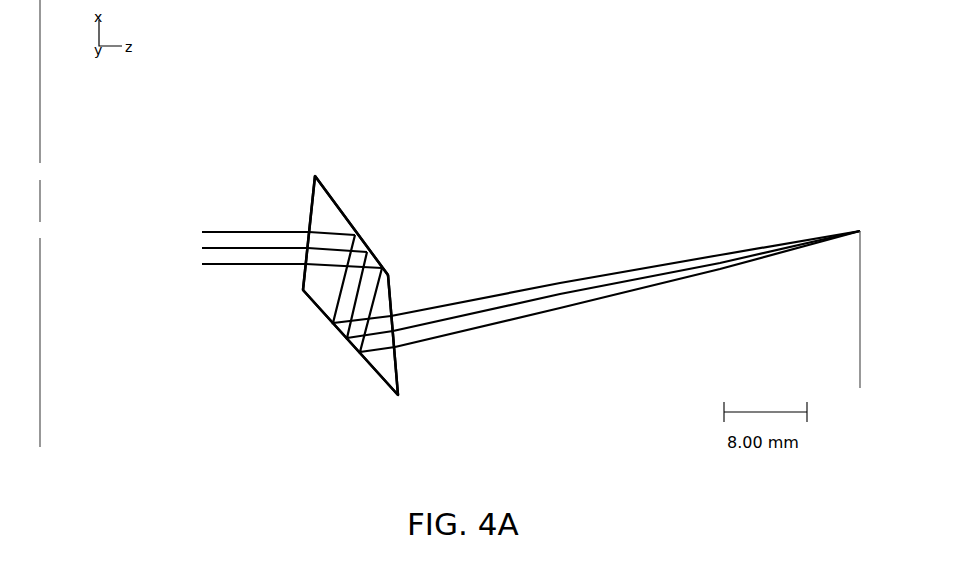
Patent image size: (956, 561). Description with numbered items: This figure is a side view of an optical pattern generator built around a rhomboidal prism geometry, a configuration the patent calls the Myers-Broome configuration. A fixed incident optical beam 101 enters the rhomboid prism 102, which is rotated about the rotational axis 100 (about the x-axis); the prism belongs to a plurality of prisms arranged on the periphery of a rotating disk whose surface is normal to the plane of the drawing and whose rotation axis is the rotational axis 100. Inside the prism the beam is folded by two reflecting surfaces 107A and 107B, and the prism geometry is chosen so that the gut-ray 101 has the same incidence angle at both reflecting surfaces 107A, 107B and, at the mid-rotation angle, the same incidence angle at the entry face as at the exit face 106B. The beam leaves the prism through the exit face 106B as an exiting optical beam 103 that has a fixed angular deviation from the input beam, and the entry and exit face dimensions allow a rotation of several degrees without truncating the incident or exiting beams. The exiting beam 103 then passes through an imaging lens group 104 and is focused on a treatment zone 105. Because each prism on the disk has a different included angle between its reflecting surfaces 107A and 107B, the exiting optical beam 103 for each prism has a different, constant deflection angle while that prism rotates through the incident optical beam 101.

The rotational axis 100 is at (40, 118).
The incident optical beam 101 is at (222, 248).
The rhomboid prism 102 is at (327, 212).
The exiting optical beam 103 is at (422, 323).
The imaging lens group 104 is at (492, 343).
The treatment zone 105 is at (858, 230).
The exit face 106B is at (303, 273).
The reflecting surface 107A is at (350, 220).
The reflecting surface 107B is at (360, 365).